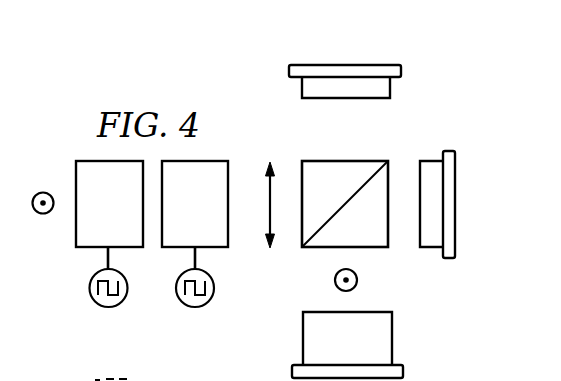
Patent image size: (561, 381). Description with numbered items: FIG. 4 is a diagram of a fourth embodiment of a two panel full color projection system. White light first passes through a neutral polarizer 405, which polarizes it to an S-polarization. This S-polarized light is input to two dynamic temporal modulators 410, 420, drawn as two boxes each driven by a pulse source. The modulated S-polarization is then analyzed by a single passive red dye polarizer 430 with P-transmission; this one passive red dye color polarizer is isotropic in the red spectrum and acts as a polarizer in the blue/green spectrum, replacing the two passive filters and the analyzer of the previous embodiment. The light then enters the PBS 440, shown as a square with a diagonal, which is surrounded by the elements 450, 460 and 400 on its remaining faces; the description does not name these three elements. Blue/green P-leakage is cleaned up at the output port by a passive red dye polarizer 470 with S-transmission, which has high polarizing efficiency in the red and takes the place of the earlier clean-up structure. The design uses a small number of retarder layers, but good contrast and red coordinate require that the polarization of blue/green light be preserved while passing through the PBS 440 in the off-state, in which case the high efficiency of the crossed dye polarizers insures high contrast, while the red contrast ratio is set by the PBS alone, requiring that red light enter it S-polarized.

The detector / sample stage element 400 is at (392, 337).
The neutral polarizer 405 is at (45, 214).
The dynamic temporal modulator 410 is at (129, 217).
The dynamic temporal modulator 420 is at (216, 217).
The passive red dye polarizer 430 is at (271, 217).
The PBS 440 is at (350, 159).
The top optical element 450 is at (352, 63).
The side optical element 460 is at (455, 205).
The passive red dye polarizer 470 is at (358, 282).